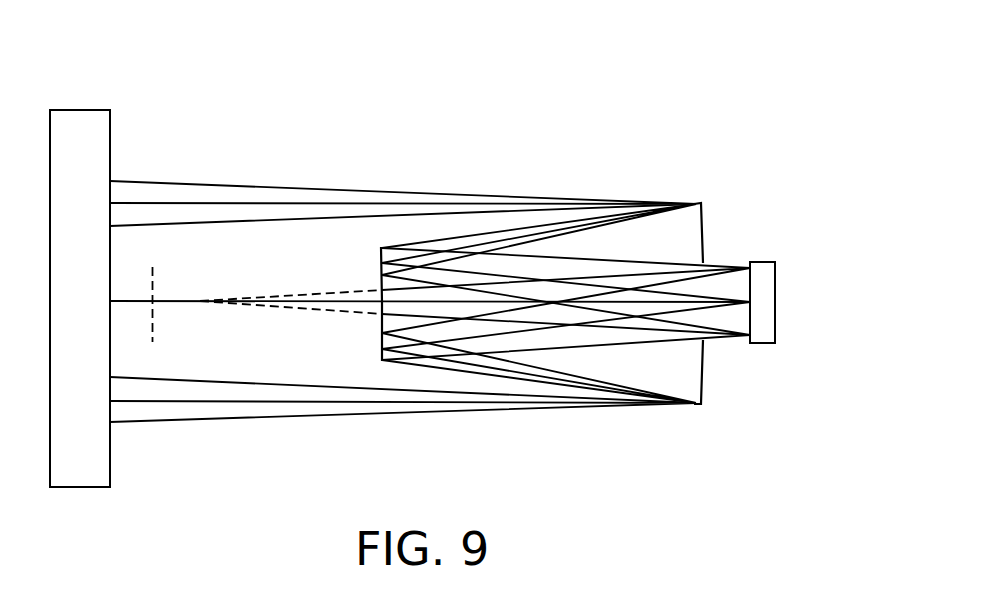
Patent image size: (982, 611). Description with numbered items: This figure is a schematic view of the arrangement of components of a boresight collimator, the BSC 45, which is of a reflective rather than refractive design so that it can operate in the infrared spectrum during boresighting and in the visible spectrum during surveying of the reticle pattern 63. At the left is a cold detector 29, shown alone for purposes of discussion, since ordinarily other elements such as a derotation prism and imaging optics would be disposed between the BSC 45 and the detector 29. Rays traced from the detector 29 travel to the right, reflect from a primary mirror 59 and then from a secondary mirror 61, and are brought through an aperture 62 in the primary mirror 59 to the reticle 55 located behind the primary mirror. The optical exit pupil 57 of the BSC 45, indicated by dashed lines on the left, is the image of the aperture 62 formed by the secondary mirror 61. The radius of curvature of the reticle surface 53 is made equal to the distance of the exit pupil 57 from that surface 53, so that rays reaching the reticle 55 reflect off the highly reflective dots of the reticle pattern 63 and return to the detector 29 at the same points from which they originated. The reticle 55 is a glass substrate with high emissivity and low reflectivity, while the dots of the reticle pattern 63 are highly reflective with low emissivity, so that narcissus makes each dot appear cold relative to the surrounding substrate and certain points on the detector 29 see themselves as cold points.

The cold detector 29 is at (73, 110).
The boresight collimator (BSC) 45 is at (608, 148).
The reticle surface 53 is at (748, 286).
The reticle 55 is at (771, 259).
The optical exit pupil 57 is at (153, 279).
The primary mirror 59 is at (700, 227).
The secondary mirror 61 is at (381, 247).
The aperture in the primary mirror 62 is at (705, 290).
The reticle pattern 63 is at (740, 346).